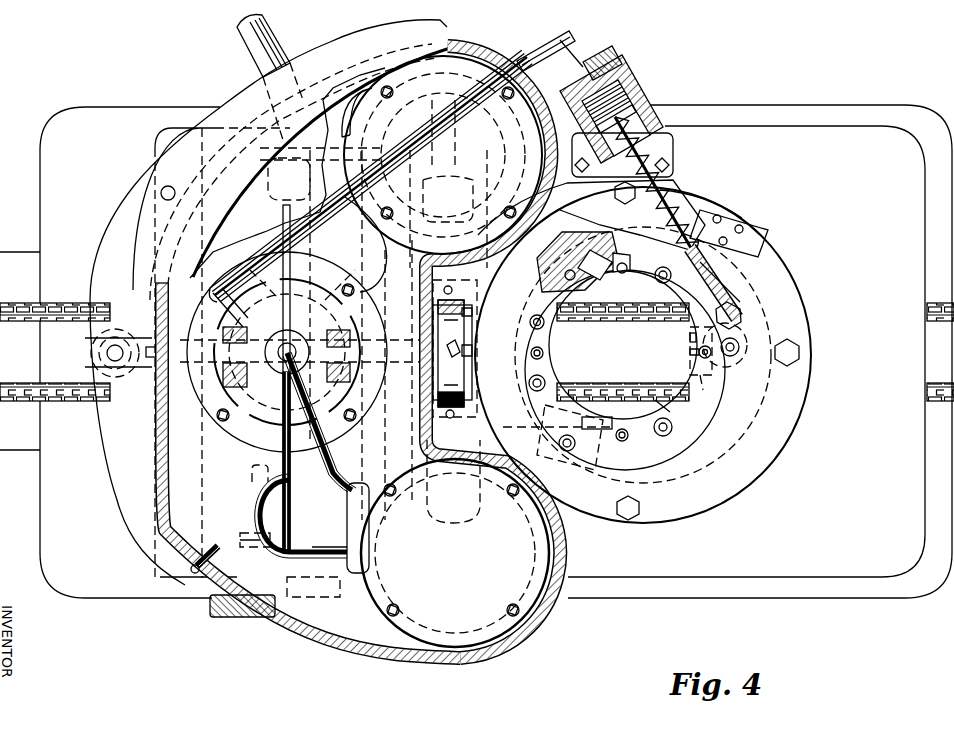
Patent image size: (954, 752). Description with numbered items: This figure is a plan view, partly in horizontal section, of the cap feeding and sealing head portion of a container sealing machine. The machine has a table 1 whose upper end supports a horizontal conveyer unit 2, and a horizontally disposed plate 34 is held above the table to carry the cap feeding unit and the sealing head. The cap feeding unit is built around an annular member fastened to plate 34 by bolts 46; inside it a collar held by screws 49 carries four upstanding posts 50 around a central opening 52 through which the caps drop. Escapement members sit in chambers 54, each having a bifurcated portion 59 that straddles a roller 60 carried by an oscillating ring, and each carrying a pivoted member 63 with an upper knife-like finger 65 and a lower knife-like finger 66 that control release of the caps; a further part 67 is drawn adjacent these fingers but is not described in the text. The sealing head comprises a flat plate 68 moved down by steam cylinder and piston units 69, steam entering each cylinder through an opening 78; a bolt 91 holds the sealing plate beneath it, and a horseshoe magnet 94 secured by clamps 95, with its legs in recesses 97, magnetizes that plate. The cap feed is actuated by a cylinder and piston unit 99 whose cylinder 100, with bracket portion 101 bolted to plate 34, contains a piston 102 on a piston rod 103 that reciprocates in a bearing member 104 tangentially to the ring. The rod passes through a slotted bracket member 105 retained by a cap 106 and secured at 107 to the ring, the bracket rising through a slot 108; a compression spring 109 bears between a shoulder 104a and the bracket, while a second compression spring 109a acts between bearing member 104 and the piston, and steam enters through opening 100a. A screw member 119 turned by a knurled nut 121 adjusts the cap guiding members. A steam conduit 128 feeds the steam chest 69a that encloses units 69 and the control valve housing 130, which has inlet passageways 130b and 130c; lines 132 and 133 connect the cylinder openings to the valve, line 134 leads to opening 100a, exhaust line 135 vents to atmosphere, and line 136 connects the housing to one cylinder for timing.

The table 1 is at (57, 226).
The horizontal conveyer unit 2 is at (27, 303).
The plate 34 is at (113, 455).
The bolts 46 is at (639, 508).
The screws 49 is at (667, 434).
The upstanding posts 50 is at (623, 441).
The central opening 52 is at (662, 405).
The chamber 54 is at (755, 388).
The bifurcated portion 59 is at (762, 366).
The roller 60 is at (742, 348).
The member 63 is at (703, 378).
The upper knife-like finger 65 is at (700, 372).
The lower knife-like finger 66 is at (690, 338).
The pin 67 is at (690, 352).
The flat plate 68 is at (560, 530).
The steam cylinder and piston units 69 is at (453, 47).
The steam chest 69a is at (160, 412).
The opening 78 is at (445, 351).
The bolt 91 is at (480, 352).
The horseshoe magnet 94 is at (452, 335).
The clamps 95 is at (444, 174).
The recesses 97 is at (466, 312).
The cylinder and piston unit 99 is at (550, 55).
The cylinder 100 is at (630, 78).
The opening 100a is at (604, 64).
The bracket portion 101 is at (668, 152).
The piston 102 is at (638, 94).
The piston rod 103 is at (647, 108).
The bearing member 104 is at (690, 205).
The shoulder 104a is at (609, 196).
The bracket member 105 is at (694, 280).
The cap 106 is at (740, 297).
The securing point 107 is at (745, 318).
The slot 108 is at (672, 283).
The compression spring 109 is at (752, 240).
The compression spring 109a is at (672, 180).
The screw member 119 is at (268, 480).
The knurled nut 121 is at (242, 617).
The steam conduit 128 is at (205, 556).
The cylindrical housing 130 is at (352, 386).
The inlet passageway 130b is at (232, 355).
The inlet passageway 130c is at (345, 350).
The line 132 is at (292, 506).
The line 133 is at (292, 526).
The line 134 is at (440, 122).
The exhaust line 135 is at (374, 280).
The line 136 is at (340, 452).